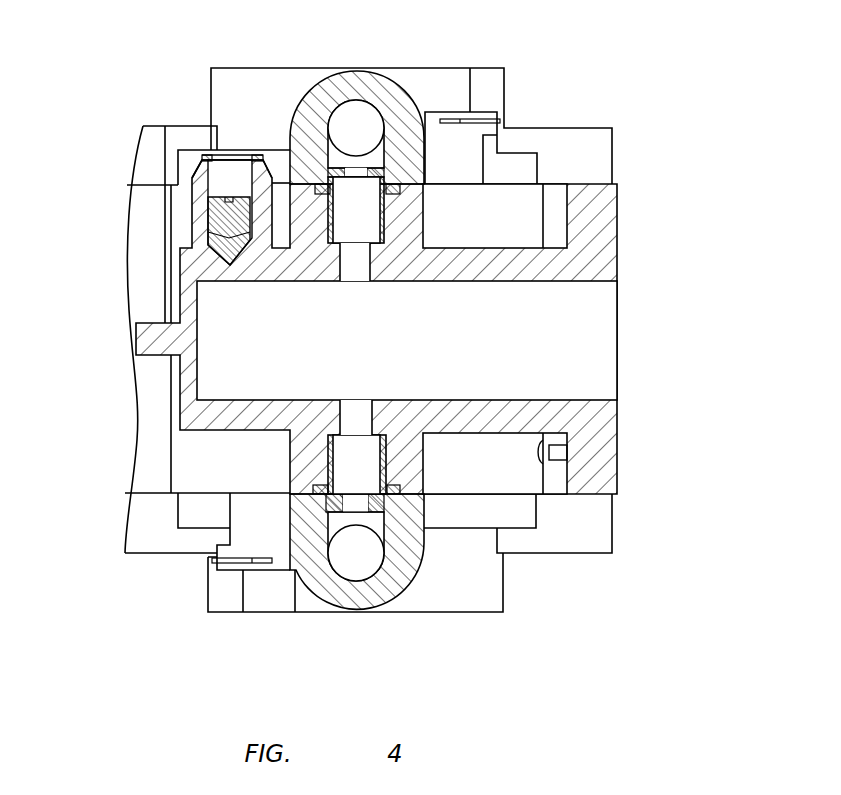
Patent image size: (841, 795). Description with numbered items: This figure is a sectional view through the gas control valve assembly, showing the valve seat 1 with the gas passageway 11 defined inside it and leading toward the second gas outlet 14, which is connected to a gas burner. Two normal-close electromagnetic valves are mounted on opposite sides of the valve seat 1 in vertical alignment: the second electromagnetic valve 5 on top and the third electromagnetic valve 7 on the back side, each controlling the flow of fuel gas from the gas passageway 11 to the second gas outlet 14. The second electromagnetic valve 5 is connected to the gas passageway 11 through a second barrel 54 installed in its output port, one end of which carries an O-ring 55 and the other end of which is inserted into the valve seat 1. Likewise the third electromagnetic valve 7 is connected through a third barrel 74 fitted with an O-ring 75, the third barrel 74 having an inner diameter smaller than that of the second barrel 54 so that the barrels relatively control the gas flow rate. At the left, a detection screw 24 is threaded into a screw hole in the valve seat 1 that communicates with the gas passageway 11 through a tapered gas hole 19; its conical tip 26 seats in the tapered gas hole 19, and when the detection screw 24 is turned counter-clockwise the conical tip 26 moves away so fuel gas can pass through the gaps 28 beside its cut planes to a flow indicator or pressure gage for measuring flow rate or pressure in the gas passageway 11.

The valve seat 1 is at (603, 458).
The second electromagnetic valve 5 is at (258, 88).
The third electromagnetic valve 7 is at (463, 595).
The gas passageway 11 is at (210, 383).
The second gas outlet 14 is at (603, 332).
The tapered gas hole 19 is at (208, 157).
The detection screw 24 is at (207, 230).
The conical tip 26 is at (232, 222).
The gaps 28 is at (207, 200).
The second barrel 54 is at (397, 242).
The O-ring 55 is at (395, 187).
The third barrel 74 is at (401, 440).
The O-ring 75 is at (322, 497).